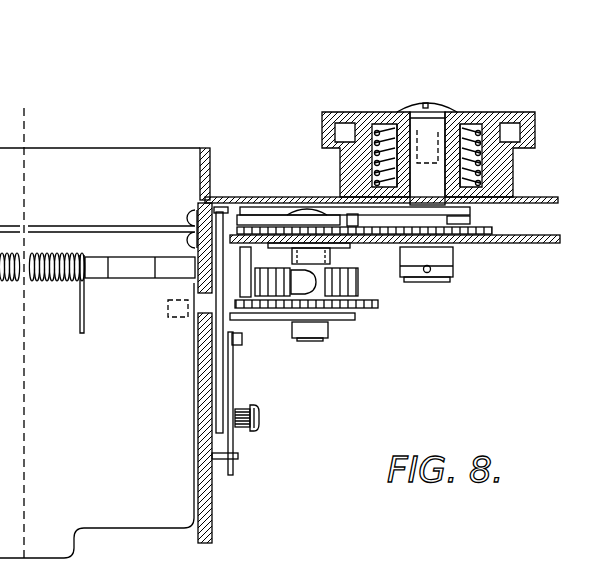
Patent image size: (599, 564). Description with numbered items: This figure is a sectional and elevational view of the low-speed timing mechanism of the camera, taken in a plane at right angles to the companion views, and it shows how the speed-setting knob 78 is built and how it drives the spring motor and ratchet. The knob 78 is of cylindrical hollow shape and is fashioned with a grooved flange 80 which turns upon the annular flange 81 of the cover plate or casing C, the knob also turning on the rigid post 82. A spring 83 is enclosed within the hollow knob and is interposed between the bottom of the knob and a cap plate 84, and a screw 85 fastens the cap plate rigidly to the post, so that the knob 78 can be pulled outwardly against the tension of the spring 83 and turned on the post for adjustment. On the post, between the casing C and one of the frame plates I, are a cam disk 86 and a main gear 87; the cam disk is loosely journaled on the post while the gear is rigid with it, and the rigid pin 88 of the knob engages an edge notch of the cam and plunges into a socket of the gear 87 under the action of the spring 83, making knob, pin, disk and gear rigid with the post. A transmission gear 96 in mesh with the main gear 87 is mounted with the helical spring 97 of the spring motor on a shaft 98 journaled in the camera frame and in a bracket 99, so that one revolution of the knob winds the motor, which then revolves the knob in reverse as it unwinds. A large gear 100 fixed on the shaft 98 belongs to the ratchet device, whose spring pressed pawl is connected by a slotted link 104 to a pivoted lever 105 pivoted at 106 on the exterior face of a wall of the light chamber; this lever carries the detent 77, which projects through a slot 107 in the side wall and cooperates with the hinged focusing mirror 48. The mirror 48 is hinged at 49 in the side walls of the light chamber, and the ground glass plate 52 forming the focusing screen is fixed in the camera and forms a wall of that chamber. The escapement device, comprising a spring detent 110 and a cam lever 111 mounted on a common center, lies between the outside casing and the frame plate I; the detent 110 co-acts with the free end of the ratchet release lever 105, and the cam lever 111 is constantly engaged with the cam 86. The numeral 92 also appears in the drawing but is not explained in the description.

The reflecting and focusing mirror 48 is at (122, 522).
The mirror hinge 49 is at (135, 257).
The ground glass plate 52 is at (84, 225).
The detent 77 is at (172, 318).
The knob 78 is at (521, 99).
The grooved flange 80 is at (503, 188).
The annular flange 81 is at (472, 211).
The rigid post 82 is at (432, 128).
The spring 83 is at (383, 128).
The cap plate 84 is at (398, 120).
The screw 85 is at (452, 108).
The cam disk 86 is at (474, 218).
The main gear 87 is at (504, 244).
The rigid pin 88 is at (494, 234).
The element 92 is at (417, 557).
The transmission gear 96 is at (257, 229).
The helical spring 97 is at (360, 287).
The shaft 98 is at (316, 340).
The bracket 99 is at (360, 323).
The large gear 100 is at (375, 306).
The slotted link 104 is at (205, 282).
The pivoted lever 105 is at (223, 388).
The pivot 106 is at (258, 424).
The slot 107 is at (197, 330).
The spring detent 110 is at (222, 197).
The cam lever 111 is at (372, 216).
The outside cover or casing C is at (555, 193).
The interior frame plates I is at (552, 244).